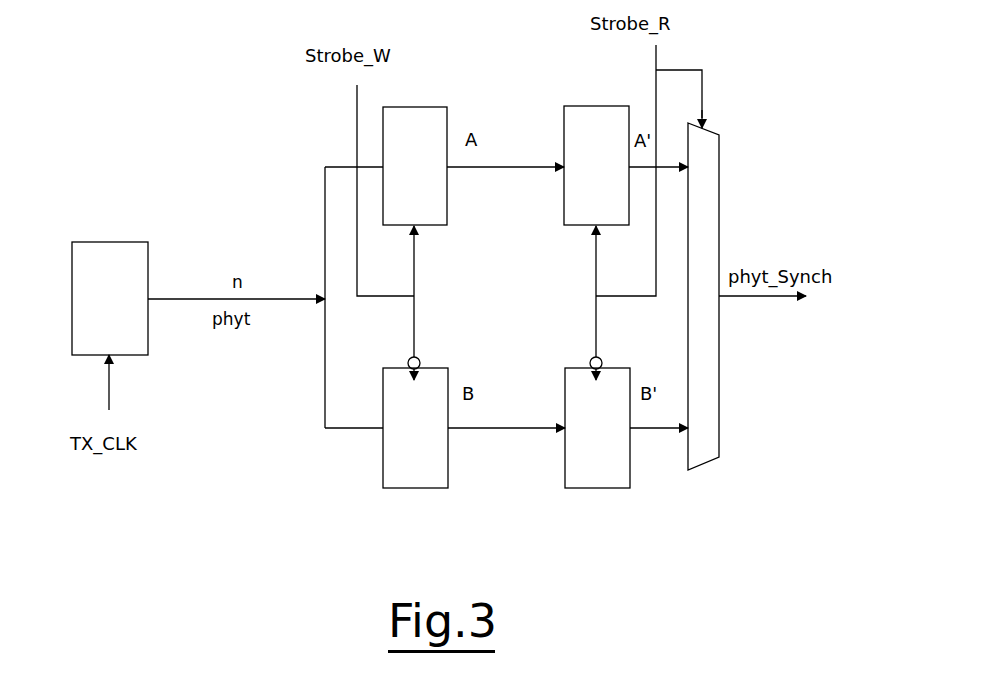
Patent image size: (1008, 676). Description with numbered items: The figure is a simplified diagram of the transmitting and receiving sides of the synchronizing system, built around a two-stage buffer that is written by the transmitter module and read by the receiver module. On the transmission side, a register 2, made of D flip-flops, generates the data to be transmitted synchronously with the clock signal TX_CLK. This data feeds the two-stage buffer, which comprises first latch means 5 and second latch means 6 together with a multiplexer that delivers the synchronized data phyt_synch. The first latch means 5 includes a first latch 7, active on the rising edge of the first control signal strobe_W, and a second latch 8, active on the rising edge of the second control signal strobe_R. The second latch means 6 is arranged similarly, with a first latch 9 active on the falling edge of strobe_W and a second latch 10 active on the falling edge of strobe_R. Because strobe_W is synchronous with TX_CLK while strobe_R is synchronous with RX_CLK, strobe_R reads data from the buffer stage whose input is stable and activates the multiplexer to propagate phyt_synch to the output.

The register 2 is at (110, 298).
The first latch means 5 is at (303, 151).
The second latch means 6 is at (353, 511).
The first latch 7 is at (416, 105).
The second latch 8 is at (596, 104).
The first latch 9 is at (415, 490).
The second latch 10 is at (597, 490).